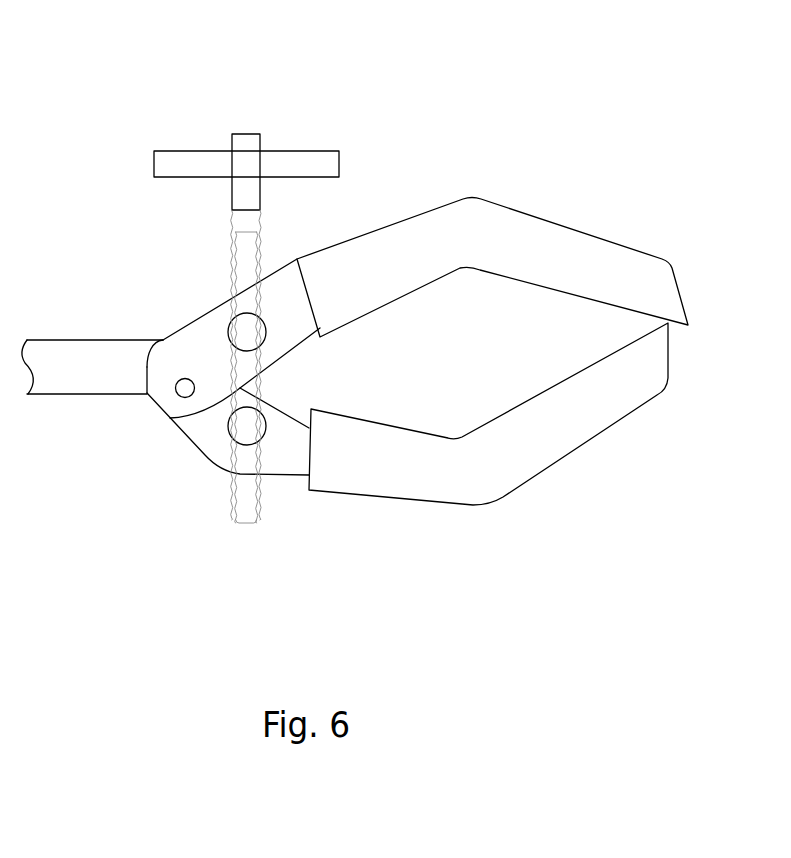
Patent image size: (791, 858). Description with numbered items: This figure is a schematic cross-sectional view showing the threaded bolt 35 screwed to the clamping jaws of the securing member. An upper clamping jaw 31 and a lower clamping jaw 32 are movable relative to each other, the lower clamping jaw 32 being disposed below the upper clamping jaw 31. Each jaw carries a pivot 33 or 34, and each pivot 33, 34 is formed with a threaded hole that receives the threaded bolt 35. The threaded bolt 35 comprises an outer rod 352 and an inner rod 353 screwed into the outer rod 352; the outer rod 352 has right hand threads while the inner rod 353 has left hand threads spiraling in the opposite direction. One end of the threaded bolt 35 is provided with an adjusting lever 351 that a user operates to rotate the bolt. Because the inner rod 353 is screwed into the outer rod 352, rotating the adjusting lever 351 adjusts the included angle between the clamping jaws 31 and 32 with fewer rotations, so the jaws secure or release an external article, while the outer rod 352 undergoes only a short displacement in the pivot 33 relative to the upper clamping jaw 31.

The upper clamping jaw 31 is at (542, 237).
The lower clamping jaw 32 is at (535, 438).
The pivot 33 is at (228, 330).
The pivot 34 is at (230, 427).
The threaded bolt 35 is at (234, 270).
The adjusting lever 351 is at (297, 158).
The outer rod 352 is at (232, 237).
The inner rod 353 is at (238, 273).